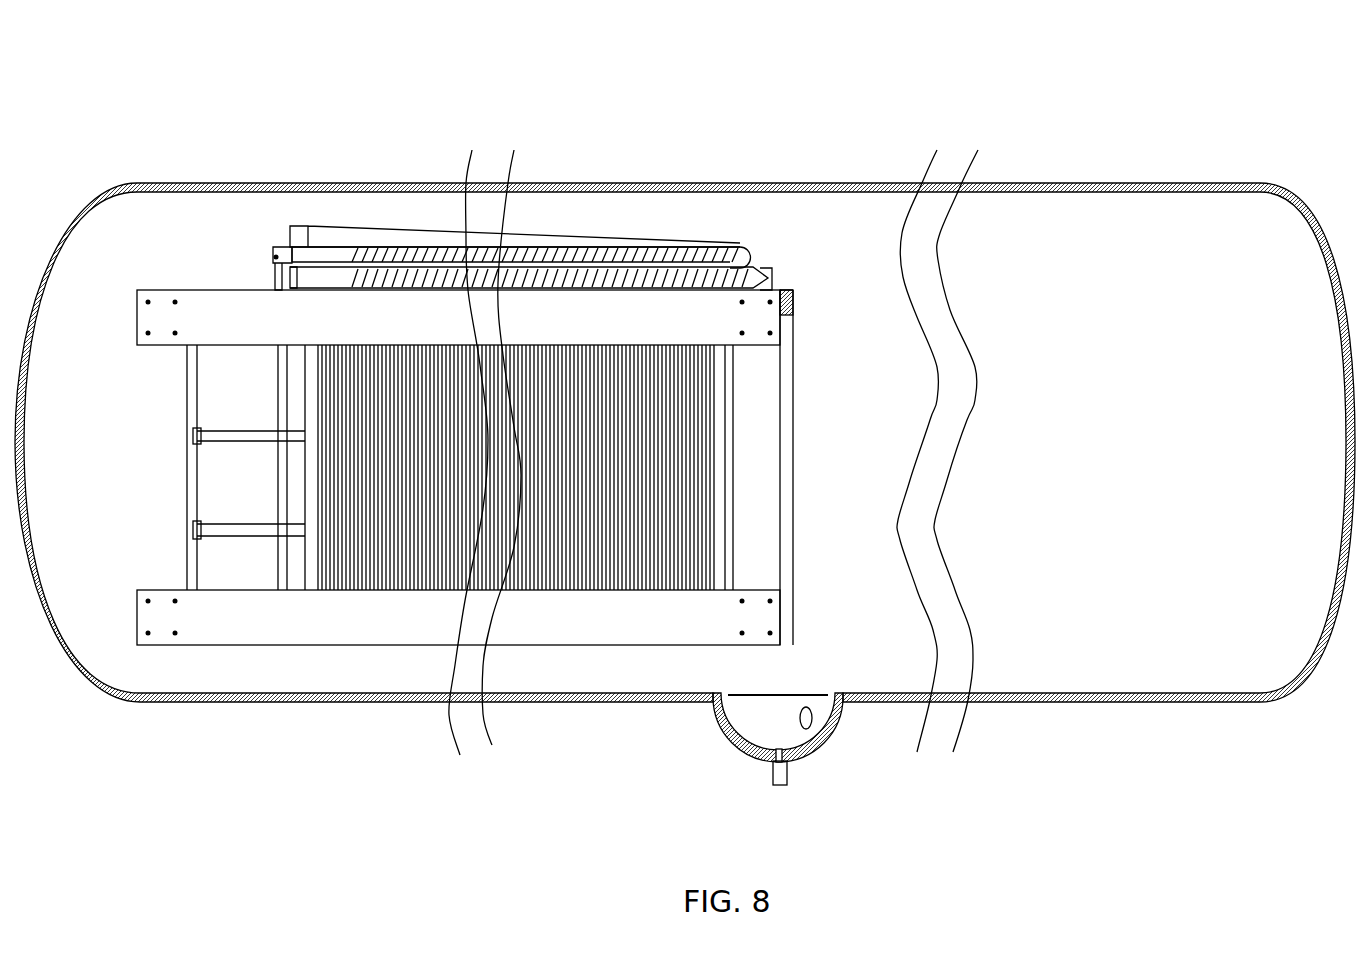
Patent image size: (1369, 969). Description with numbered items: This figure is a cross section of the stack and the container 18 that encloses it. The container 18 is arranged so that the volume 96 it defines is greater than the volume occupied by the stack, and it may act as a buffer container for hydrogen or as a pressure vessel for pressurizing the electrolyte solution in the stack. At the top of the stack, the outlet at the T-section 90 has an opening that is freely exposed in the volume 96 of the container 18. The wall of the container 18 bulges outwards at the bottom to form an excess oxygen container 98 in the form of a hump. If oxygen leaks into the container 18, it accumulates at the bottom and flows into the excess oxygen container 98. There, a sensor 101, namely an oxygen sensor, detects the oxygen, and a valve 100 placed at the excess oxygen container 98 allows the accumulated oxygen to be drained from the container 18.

The container 18 is at (868, 183).
The T-section 90 is at (275, 250).
The volume 96 is at (826, 255).
The excess oxygen container 98 is at (735, 745).
The valve 100 is at (772, 772).
The sensor 101 is at (816, 725).